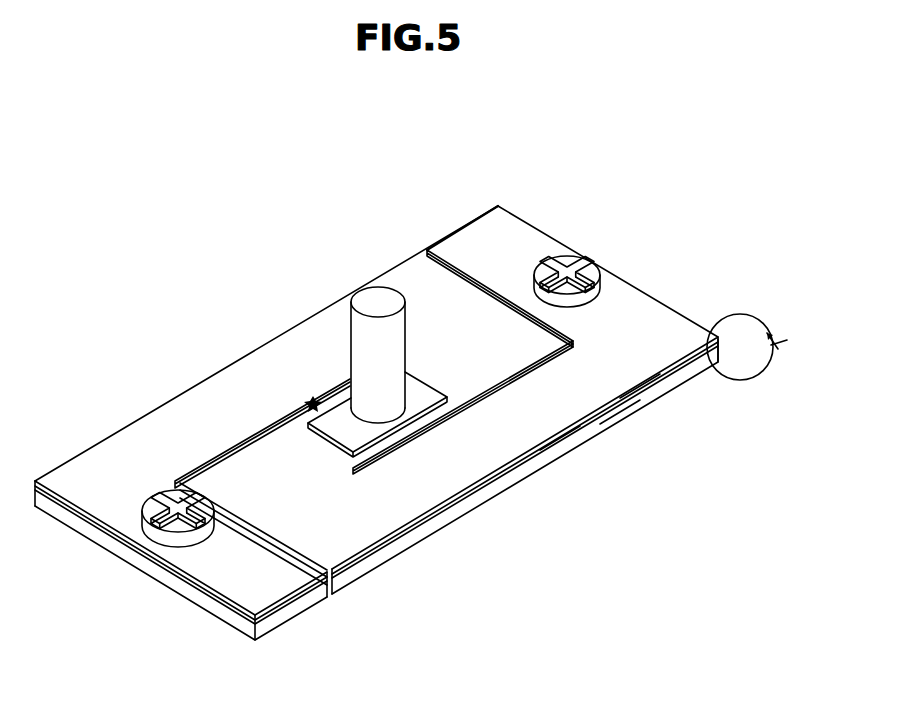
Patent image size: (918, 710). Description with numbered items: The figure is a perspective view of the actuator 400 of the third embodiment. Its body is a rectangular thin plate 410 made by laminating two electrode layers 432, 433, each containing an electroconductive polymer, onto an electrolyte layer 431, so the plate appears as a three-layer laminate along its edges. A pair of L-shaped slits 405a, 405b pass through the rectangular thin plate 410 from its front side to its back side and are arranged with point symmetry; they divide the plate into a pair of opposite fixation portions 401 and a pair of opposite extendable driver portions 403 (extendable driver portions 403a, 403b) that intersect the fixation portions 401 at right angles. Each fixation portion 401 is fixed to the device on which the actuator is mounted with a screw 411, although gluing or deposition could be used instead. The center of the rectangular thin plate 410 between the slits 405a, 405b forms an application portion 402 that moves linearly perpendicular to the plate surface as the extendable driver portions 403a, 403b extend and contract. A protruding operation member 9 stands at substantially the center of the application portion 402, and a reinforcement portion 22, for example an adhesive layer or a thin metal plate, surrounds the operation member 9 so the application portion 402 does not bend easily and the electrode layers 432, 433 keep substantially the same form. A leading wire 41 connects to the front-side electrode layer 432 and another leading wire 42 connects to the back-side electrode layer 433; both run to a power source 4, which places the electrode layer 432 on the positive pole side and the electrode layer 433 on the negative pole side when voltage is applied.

The actuator 400 is at (548, 160).
The fixation portion 401 is at (376, 445).
The extendable driver portion 403 is at (376, 423).
The extendable driver portion 403a is at (481, 528).
The extendable driver portion 403b is at (272, 330).
The rectangular thin plate 410 is at (455, 215).
The screw 411 is at (148, 510).
The operation member 9 is at (375, 300).
The application portion 402 is at (305, 402).
The L-shaped slit 405a is at (487, 376).
The L-shaped slit 405b is at (213, 465).
The reinforcement portion 22 is at (370, 444).
The leading wire 41 is at (733, 314).
The leading wire 42 is at (738, 381).
The power source 4 is at (780, 322).
The electrolyte layer 431 is at (563, 446).
The electrode layer 432 is at (638, 392).
The electrode layer 433 is at (617, 426).